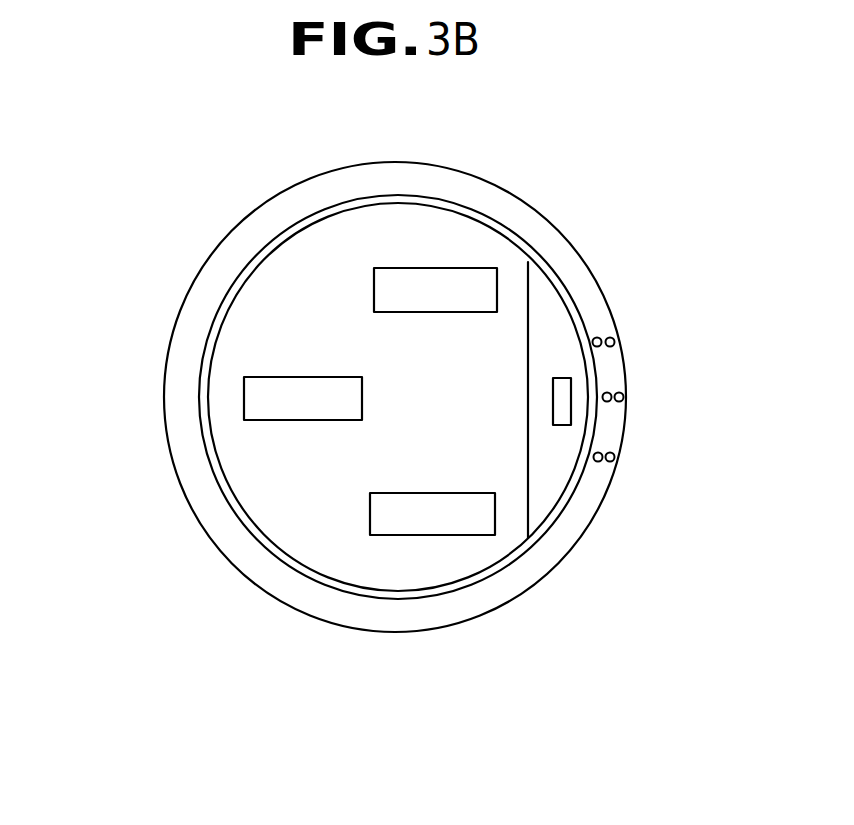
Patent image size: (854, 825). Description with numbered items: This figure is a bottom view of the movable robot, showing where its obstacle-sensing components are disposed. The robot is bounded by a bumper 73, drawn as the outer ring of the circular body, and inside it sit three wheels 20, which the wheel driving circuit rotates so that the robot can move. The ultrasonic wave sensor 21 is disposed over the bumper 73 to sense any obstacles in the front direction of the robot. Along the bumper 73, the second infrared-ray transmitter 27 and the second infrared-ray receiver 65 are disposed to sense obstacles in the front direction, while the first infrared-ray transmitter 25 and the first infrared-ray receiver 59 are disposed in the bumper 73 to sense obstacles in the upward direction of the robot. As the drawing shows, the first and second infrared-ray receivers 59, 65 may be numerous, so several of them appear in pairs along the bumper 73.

The bumper 73 is at (523, 222).
The wheels 20 is at (378, 285).
The ultrasonic wave sensor 21 is at (558, 378).
The first infrared-ray receiver 59 is at (597, 338).
The second infrared-ray receiver 65 is at (611, 338).
The first infrared-ray transmitter 25 is at (607, 392).
The second infrared-ray transmitter 27 is at (624, 396).